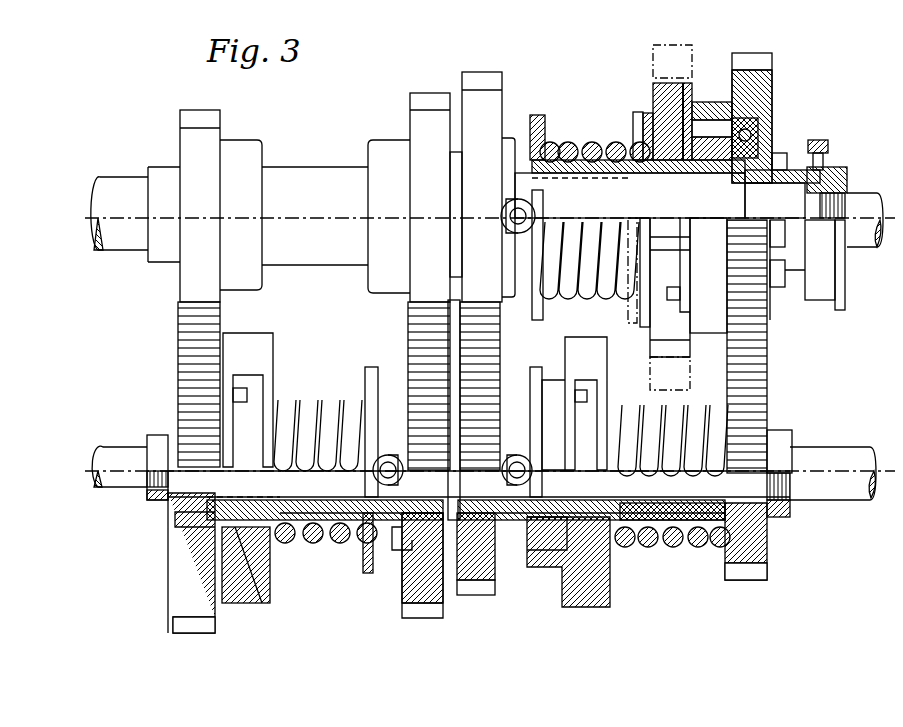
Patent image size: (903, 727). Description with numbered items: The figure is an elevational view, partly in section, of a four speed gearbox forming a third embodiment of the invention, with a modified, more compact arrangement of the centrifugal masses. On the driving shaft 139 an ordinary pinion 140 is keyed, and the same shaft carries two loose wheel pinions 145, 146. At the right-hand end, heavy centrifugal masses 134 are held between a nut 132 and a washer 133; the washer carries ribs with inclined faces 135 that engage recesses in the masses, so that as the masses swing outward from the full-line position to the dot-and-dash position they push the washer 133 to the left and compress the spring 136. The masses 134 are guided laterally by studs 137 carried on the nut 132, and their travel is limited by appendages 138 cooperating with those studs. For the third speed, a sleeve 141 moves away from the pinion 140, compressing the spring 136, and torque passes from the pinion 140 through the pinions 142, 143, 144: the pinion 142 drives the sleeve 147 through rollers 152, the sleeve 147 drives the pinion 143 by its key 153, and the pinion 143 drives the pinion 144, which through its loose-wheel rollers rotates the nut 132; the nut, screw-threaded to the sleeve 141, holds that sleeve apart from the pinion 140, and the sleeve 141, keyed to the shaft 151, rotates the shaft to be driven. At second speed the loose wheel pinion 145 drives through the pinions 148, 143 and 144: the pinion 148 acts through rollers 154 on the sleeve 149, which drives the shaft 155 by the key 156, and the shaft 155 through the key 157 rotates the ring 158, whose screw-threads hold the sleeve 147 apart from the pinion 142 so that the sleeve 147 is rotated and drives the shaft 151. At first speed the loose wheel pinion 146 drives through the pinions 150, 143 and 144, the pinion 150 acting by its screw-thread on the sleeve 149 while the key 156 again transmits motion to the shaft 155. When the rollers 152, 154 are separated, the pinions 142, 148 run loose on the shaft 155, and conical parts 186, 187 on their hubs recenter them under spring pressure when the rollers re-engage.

The nut 132 is at (700, 128).
The washer 133 is at (648, 172).
The centrifugal masses 134 is at (675, 100).
The ribs with inclined faces 135 is at (694, 172).
The spring 136 is at (638, 148).
The studs 137 is at (672, 292).
The appendages 138 is at (672, 245).
The driving shaft 139 is at (160, 160).
The pinion 140 is at (492, 112).
The sleeve 141 is at (575, 160).
The pinion 142 is at (492, 378).
The pinion 143 is at (757, 390).
The pinion 144 is at (768, 97).
The loose wheel pinion 145 is at (415, 122).
The loose wheel pinion 146 is at (220, 140).
The sleeve 147 is at (556, 540).
The pinion 148 is at (417, 340).
The sleeve 149 is at (336, 543).
The pinion 150 is at (190, 372).
The shaft 151 is at (785, 190).
The rollers 152 is at (520, 458).
The key 153 is at (712, 548).
The rollers 154 is at (388, 452).
The shaft 155 is at (190, 490).
The key 156 is at (236, 508).
The key 157 is at (642, 507).
The ring 158 is at (588, 512).
The conical part 186 is at (476, 582).
The conical part 187 is at (428, 516).